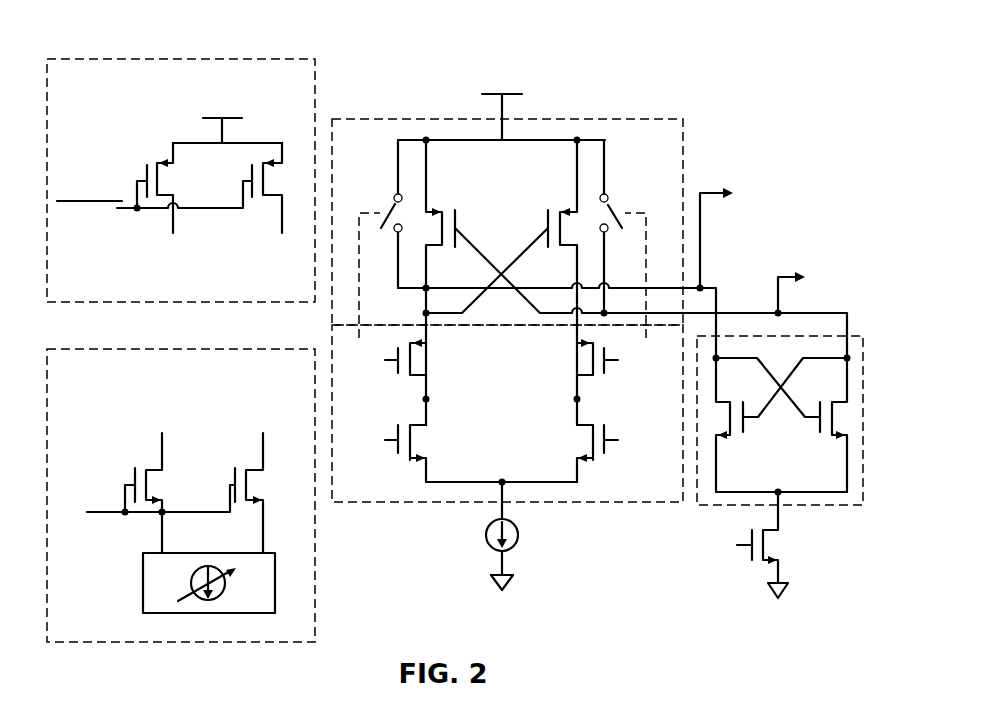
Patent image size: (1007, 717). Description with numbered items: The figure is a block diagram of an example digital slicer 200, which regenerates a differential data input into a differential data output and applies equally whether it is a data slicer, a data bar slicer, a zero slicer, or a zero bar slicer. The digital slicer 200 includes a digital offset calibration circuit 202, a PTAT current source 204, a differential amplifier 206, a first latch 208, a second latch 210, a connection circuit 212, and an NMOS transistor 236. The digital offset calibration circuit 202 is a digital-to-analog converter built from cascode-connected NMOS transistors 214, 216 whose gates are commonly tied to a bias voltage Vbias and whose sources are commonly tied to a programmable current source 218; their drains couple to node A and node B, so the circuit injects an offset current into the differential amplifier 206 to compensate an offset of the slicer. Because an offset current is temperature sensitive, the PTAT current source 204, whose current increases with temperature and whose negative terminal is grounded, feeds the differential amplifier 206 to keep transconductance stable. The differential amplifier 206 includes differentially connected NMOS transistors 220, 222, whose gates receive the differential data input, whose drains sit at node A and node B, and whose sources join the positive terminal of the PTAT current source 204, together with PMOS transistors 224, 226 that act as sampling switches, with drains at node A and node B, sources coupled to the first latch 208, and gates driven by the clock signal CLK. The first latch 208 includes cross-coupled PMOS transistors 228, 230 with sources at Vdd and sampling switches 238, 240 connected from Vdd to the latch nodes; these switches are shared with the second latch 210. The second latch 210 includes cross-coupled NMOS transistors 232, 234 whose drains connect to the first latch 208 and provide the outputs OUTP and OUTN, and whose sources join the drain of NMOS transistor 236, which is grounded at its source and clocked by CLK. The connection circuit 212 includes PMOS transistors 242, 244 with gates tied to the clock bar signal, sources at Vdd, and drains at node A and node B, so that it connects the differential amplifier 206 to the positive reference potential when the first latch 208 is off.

The digital slicer 200 is at (763, 54).
The digital offset calibration circuit 202 is at (105, 348).
The PTAT current source 204 is at (492, 547).
The differential amplifier 206 is at (612, 504).
The first latch 208 is at (653, 118).
The second latch 210 is at (802, 507).
The connection circuit 212 is at (105, 58).
The NMOS transistor 214 is at (132, 480).
The NMOS transistor 216 is at (232, 480).
The programmable current source 218 is at (155, 553).
The NMOS transistor 220 is at (413, 442).
The NMOS transistor 222 is at (590, 442).
The PMOS transistor 224 is at (413, 362).
The PMOS transistor 226 is at (590, 362).
The PMOS transistor 228 is at (457, 210).
The PMOS transistor 230 is at (547, 218).
The NMOS transistor 232 is at (745, 427).
The NMOS transistor 234 is at (820, 430).
The NMOS transistor 236 is at (747, 558).
The sampling switch 238 is at (390, 212).
The sampling switch 240 is at (615, 212).
The PMOS transistor 242 is at (145, 176).
The PMOS transistor 244 is at (249, 176).